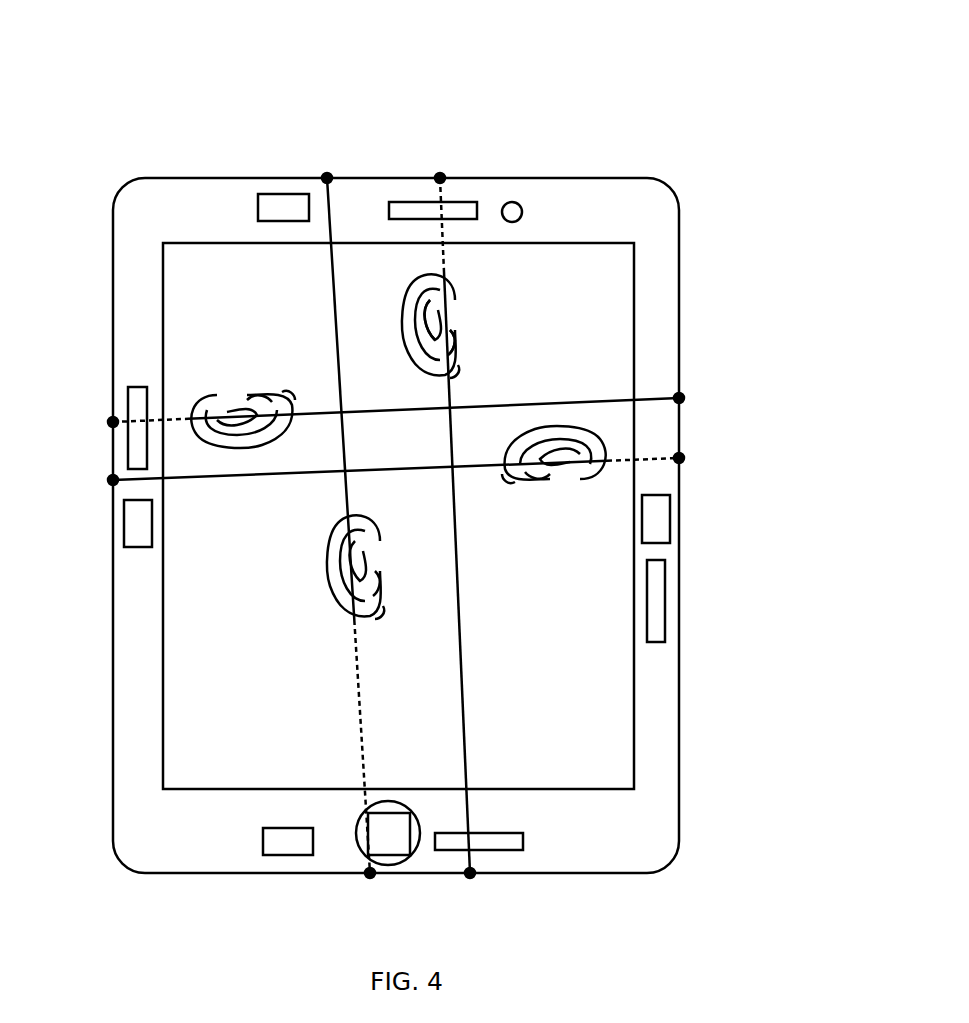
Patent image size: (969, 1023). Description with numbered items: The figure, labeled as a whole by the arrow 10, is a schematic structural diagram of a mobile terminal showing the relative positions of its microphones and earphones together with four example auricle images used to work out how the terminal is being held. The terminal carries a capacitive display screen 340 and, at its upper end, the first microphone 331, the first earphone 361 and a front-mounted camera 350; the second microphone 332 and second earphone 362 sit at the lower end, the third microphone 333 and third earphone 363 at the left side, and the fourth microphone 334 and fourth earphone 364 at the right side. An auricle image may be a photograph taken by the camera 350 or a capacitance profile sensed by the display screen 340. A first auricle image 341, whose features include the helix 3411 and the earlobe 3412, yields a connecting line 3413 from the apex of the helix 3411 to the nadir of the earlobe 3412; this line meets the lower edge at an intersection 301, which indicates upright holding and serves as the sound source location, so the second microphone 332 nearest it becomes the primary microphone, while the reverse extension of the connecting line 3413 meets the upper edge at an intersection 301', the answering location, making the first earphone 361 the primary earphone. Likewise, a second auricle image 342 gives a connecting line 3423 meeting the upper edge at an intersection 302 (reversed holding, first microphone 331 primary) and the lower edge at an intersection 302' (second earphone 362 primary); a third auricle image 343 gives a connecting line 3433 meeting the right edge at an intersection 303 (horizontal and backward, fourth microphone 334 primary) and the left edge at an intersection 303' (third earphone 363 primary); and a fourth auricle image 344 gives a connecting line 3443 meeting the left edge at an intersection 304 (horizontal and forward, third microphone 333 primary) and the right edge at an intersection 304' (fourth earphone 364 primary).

The electronic device 10 is at (445, 58).
The display screen 340 is at (190, 706).
The first microphone 331 is at (283, 194).
The second microphone 332 is at (288, 856).
The third microphone 333 is at (124, 522).
The fourth microphone 334 is at (670, 518).
The front-mounted camera 350 is at (519, 205).
The first earphone 361 is at (458, 202).
The second earphone 362 is at (523, 842).
The third earphone 363 is at (137, 387).
The fourth earphone 364 is at (665, 600).
The intersection 301 is at (506, 894).
The intersection 301' is at (396, 198).
The intersection 302 is at (294, 139).
The intersection 302' is at (406, 770).
The intersection 303 is at (715, 371).
The intersection 303' is at (109, 403).
The intersection 304 is at (74, 489).
The intersection 304' is at (699, 475).
The first auricle image 341 is at (462, 308).
The second auricle image 342 is at (328, 593).
The third auricle image 343 is at (216, 387).
The fourth auricle image 344 is at (575, 485).
The helix 3411 is at (410, 284).
The earlobe 3412 is at (458, 360).
The connecting line 3413 is at (460, 597).
The connecting line 3423 is at (331, 260).
The connecting line 3433 is at (520, 402).
The connecting line 3443 is at (250, 478).